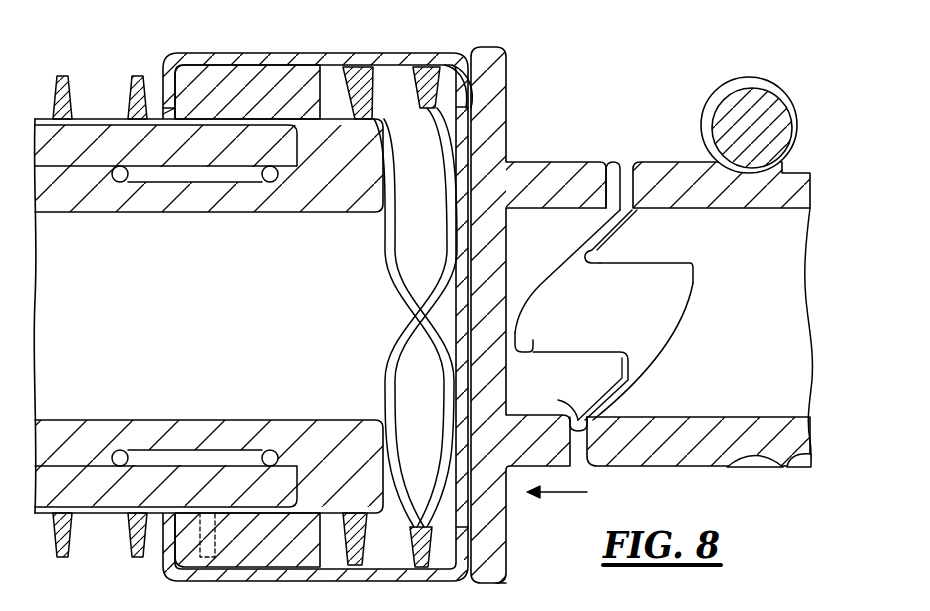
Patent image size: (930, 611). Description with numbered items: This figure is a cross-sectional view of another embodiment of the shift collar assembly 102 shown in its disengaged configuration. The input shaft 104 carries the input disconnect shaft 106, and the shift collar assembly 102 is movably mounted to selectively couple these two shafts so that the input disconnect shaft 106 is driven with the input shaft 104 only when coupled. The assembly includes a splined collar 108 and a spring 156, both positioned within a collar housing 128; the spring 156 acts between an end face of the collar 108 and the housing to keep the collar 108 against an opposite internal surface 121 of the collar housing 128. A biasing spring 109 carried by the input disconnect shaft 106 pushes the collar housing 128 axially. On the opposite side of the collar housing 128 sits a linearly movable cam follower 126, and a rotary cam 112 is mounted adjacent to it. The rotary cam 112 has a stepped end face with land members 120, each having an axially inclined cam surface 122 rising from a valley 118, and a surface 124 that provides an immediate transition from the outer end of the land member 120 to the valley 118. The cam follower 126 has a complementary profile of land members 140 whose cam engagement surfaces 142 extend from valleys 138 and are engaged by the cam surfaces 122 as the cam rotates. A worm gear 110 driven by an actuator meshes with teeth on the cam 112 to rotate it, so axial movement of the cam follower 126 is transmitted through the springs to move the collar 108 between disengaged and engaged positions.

The shift collar assembly 102 is at (605, 87).
The input shaft 104 is at (373, 116).
The input disconnect shaft 106 is at (100, 133).
The splined collar 108 is at (195, 78).
The biasing spring 109 is at (57, 92).
The worm gear 110 is at (757, 76).
The rotary cam 112 is at (695, 468).
The valley 118 is at (680, 290).
The land member 120 is at (577, 257).
The internal surface 121 is at (163, 82).
The cam surface 122 is at (658, 348).
The surface 124 is at (655, 265).
The cam follower 126 is at (508, 574).
The collar housing 128 is at (342, 54).
The valley 138 is at (530, 347).
The land member 140 is at (634, 167).
The cam engagement surface 142 is at (535, 289).
The spring 156 is at (449, 57).